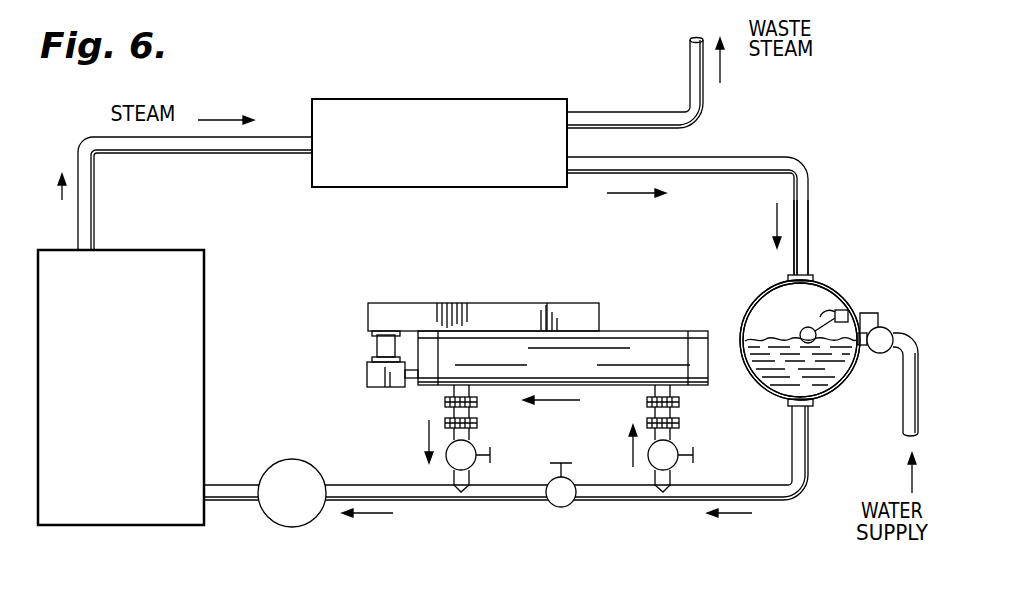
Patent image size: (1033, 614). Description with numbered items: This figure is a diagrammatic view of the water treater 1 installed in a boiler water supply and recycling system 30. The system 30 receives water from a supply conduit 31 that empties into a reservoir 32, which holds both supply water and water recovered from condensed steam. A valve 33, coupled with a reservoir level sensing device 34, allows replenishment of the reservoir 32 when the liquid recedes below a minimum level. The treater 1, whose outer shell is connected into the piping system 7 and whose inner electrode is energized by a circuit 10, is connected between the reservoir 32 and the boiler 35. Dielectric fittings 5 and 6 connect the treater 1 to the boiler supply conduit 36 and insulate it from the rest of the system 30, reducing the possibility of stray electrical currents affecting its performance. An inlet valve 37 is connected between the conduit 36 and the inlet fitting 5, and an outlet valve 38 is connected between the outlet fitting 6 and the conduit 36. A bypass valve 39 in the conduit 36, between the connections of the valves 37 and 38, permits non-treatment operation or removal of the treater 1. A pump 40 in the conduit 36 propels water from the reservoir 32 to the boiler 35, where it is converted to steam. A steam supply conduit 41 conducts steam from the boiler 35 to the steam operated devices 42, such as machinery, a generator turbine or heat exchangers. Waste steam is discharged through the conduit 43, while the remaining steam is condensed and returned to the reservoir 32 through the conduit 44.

The treater 1 is at (633, 328).
The dielectric fitting 5 is at (668, 412).
The dielectric fitting 6 is at (460, 412).
The piping system 7 is at (814, 190).
The circuit 10 is at (478, 316).
The boiler water supply and recycling system 30 is at (786, 143).
The supply conduit 31 is at (900, 418).
The reservoir 32 is at (831, 394).
The valve 33 is at (882, 336).
The reservoir level sensing device 34 is at (826, 302).
The boiler 35 is at (164, 516).
The boiler supply conduit 36 is at (794, 490).
The inlet valve 37 is at (676, 460).
The outlet valve 38 is at (473, 460).
The bypass valve 39 is at (559, 500).
The pump 40 is at (276, 514).
The steam supply conduit 41 is at (270, 143).
The steam operated devices 42 is at (455, 104).
The conduit 43 is at (690, 117).
The conduit 44 is at (808, 229).